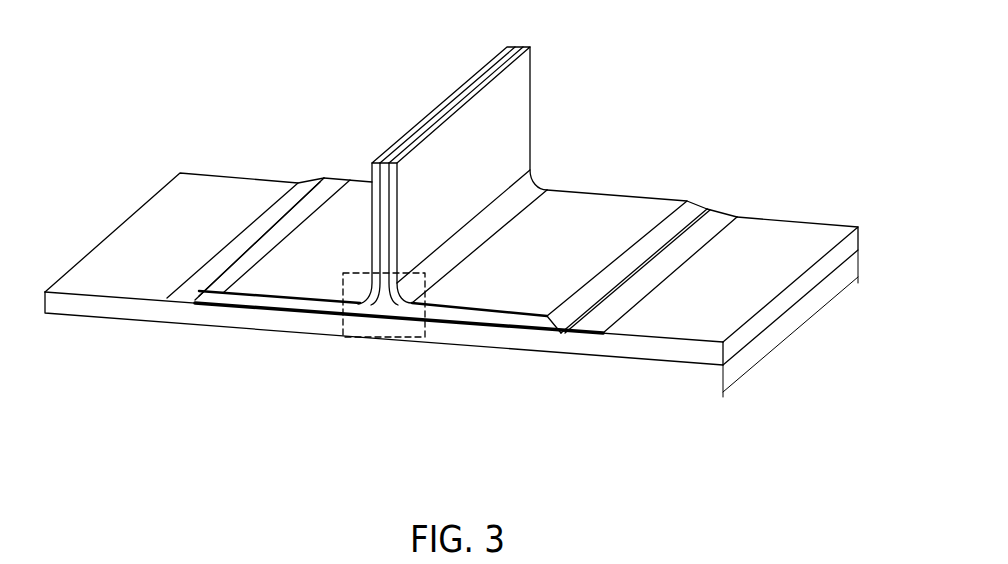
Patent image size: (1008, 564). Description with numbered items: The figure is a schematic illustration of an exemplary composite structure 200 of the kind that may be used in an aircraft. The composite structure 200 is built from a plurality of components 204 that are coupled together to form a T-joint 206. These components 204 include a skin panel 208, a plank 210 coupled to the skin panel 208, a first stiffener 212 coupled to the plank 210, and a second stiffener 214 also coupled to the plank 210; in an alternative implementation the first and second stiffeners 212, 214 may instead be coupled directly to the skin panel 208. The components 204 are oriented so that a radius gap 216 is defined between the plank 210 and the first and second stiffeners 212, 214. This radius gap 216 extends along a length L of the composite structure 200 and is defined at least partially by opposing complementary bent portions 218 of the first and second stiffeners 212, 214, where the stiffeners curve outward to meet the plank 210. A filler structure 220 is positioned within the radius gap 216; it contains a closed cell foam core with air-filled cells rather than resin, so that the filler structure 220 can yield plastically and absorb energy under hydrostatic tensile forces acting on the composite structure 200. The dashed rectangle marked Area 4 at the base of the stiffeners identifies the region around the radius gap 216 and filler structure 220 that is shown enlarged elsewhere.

The composite structure 200 is at (157, 48).
The components 204 is at (282, 144).
The T-joint 206 is at (424, 358).
The skin panel 208 is at (803, 237).
The plank 210 is at (592, 322).
The first stiffener 212 is at (370, 166).
The second stiffener 214 is at (628, 207).
The radius gap 216 is at (380, 318).
The bent portions 218 is at (368, 322).
The filler structure 220 is at (397, 320).
The Area 4 is at (405, 283).
The length L is at (801, 326).